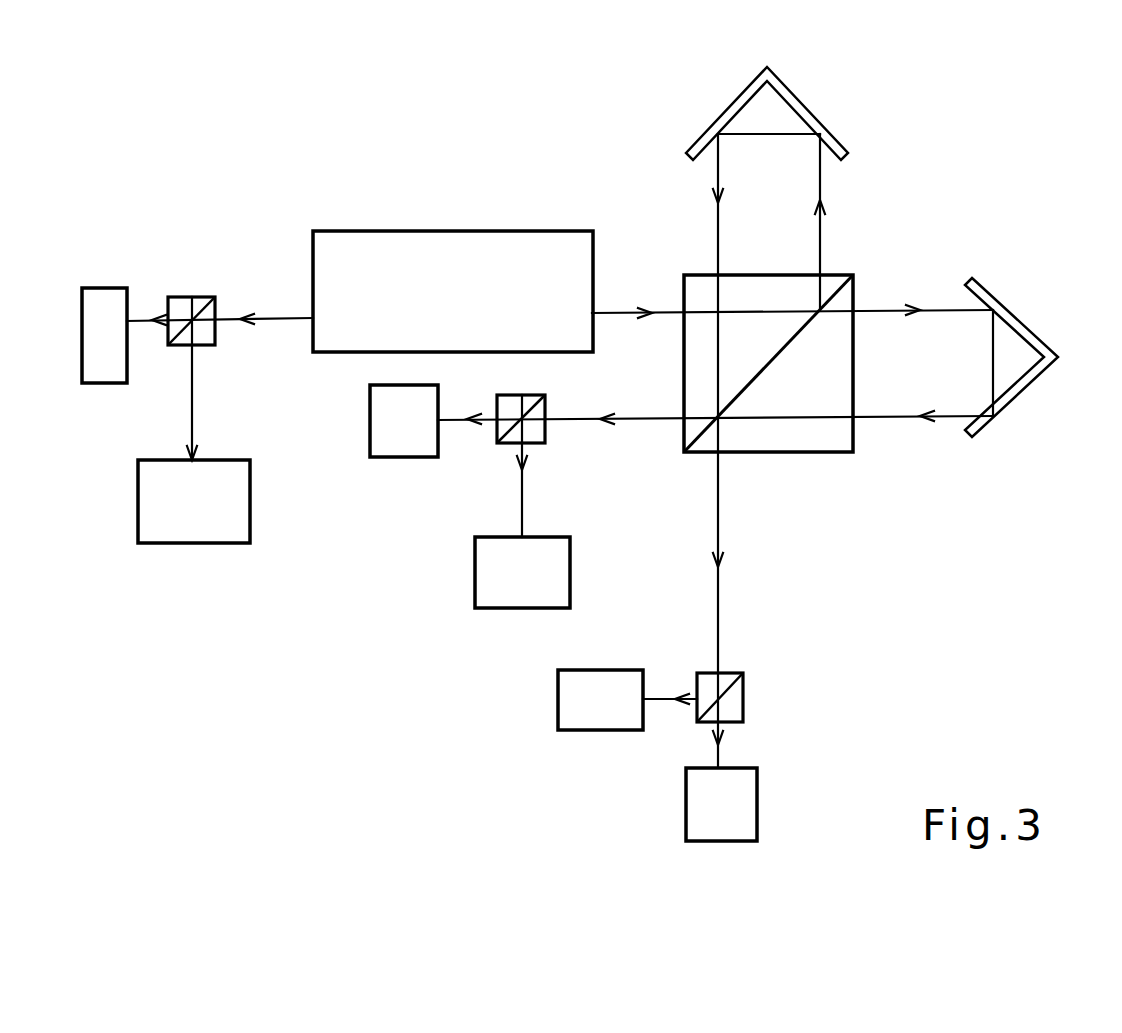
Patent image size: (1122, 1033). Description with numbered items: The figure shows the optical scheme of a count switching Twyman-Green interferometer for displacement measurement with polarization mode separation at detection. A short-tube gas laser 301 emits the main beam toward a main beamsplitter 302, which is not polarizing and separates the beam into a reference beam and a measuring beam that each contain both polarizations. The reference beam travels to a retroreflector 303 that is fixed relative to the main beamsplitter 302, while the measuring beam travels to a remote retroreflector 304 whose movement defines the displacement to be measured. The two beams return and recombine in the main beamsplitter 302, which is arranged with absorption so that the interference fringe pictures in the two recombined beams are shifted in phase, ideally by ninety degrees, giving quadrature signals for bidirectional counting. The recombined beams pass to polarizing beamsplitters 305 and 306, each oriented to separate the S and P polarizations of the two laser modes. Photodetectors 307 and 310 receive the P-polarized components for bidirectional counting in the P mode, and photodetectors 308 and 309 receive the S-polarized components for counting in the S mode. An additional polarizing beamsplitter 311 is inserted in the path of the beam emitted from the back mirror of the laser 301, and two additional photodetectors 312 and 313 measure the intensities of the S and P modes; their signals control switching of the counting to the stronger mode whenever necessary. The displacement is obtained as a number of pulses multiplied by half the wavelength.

The short-tube gas laser 301 is at (453, 275).
The main beamsplitter 302 is at (768, 379).
The retroreflector for the reference beam 303 is at (767, 96).
The remote retroreflector 304 is at (1034, 357).
The polarizing beamsplitter 305 is at (747, 699).
The polarizing beamsplitter 306 is at (502, 403).
The photodetector 307 is at (721, 818).
The photodetector 308 is at (576, 700).
The photodetector 309 is at (497, 572).
The photodetector 310 is at (404, 438).
The additional polarizing beamsplitter 311 is at (212, 302).
The additional photodetector 312 is at (194, 519).
The additional photodetector 313 is at (104, 315).